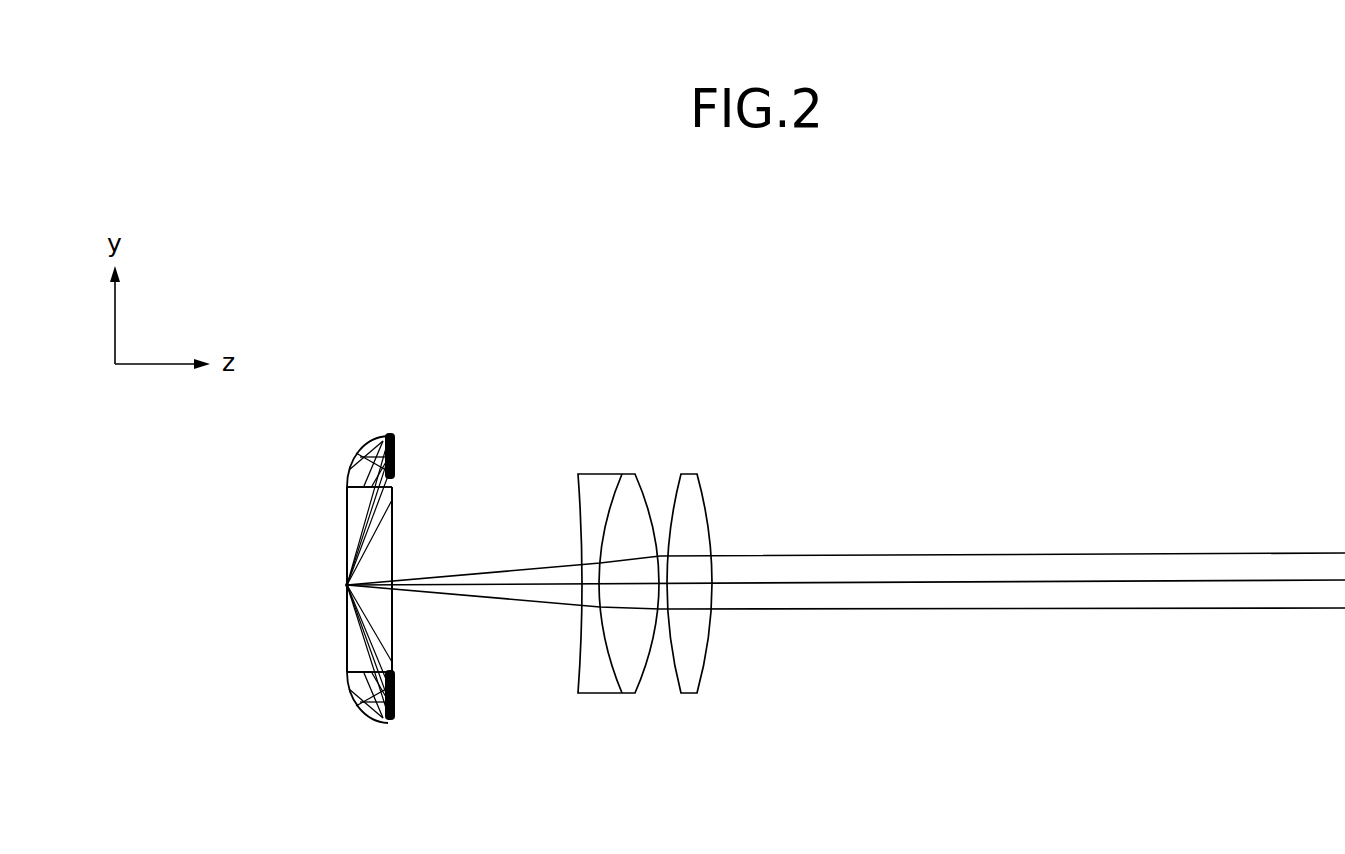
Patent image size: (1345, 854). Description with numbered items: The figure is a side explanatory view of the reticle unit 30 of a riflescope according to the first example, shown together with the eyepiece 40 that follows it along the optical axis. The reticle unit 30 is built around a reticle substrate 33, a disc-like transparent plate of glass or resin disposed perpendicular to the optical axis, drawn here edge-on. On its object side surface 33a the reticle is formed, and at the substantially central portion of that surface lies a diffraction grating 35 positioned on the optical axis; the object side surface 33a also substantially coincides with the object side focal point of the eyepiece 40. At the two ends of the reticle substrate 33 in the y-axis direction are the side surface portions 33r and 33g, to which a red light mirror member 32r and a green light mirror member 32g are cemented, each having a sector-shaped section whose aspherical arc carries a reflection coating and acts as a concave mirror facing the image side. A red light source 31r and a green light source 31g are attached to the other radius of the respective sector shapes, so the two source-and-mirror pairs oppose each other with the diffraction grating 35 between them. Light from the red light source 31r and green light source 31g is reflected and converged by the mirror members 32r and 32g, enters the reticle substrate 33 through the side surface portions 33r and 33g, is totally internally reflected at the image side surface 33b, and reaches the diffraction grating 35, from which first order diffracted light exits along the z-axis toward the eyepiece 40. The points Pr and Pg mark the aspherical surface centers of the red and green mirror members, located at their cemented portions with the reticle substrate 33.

The reticle unit 30 is at (391, 378).
The red light source 31r is at (395, 448).
The green light source 31g is at (396, 698).
The red light mirror member 32r is at (365, 449).
The green light mirror member 32g is at (373, 714).
The reticle substrate 33 is at (357, 638).
The object side surface 33a is at (338, 516).
The image side surface 33b is at (408, 543).
The side surface portion 33r is at (392, 500).
The side surface portion 33g is at (392, 656).
The diffraction grating 35 is at (347, 585).
The eyepiece 40 is at (715, 722).
The aspherical surface center Pr is at (338, 483).
The aspherical surface center Pg is at (338, 674).